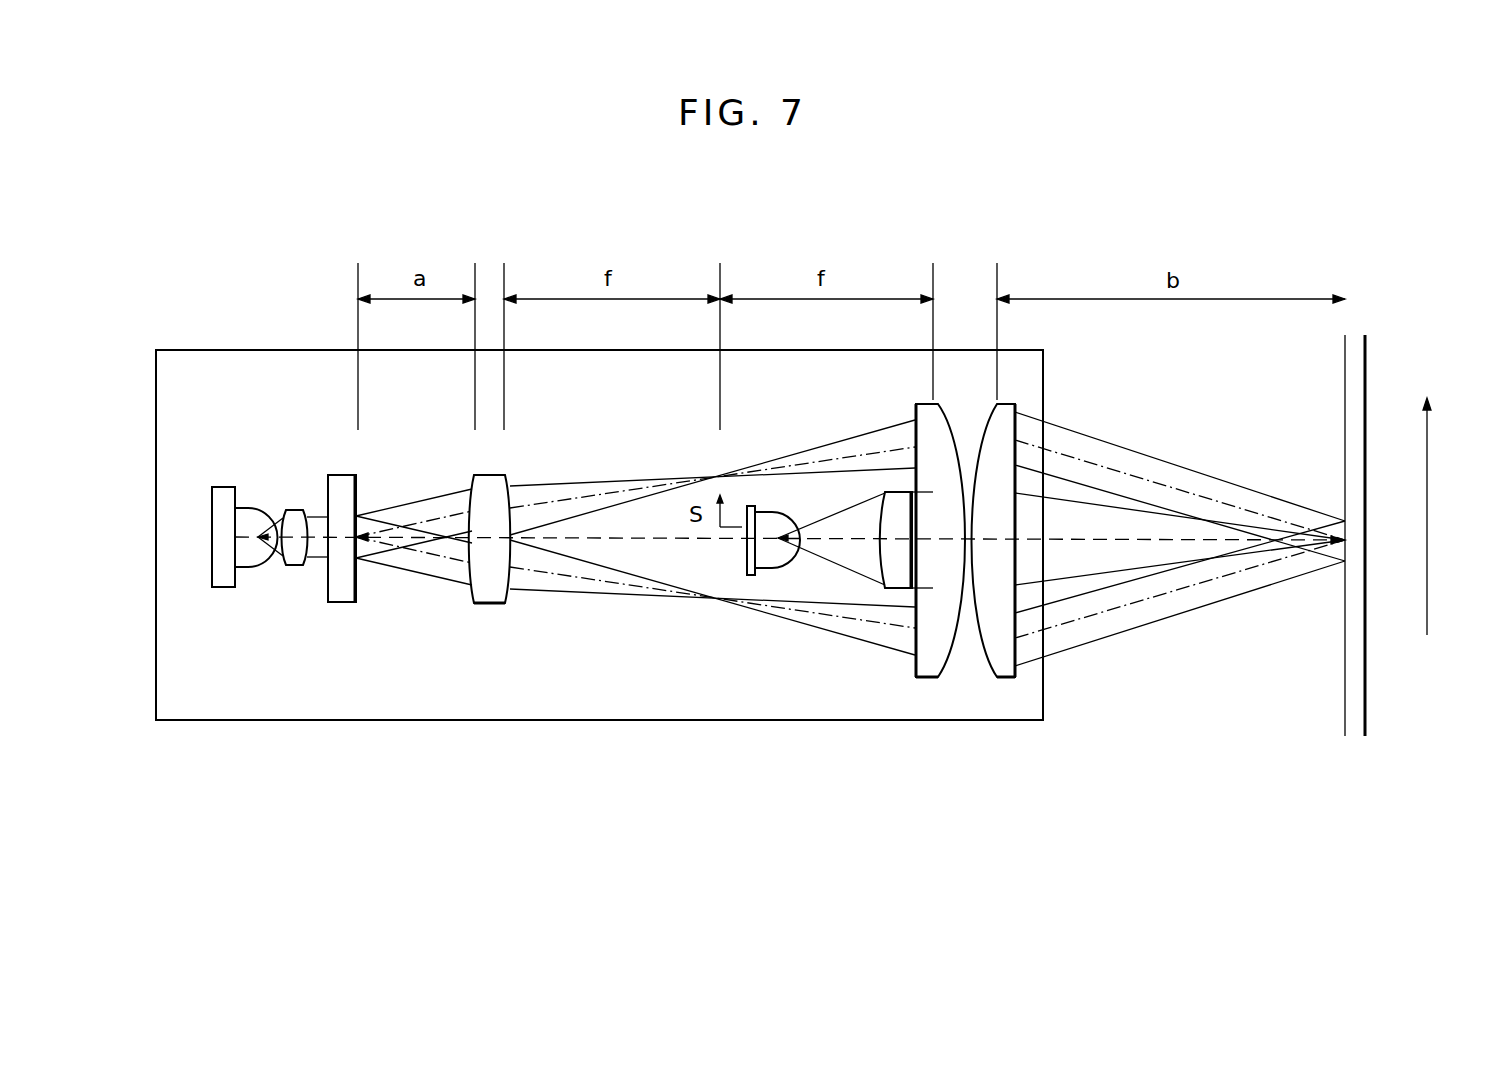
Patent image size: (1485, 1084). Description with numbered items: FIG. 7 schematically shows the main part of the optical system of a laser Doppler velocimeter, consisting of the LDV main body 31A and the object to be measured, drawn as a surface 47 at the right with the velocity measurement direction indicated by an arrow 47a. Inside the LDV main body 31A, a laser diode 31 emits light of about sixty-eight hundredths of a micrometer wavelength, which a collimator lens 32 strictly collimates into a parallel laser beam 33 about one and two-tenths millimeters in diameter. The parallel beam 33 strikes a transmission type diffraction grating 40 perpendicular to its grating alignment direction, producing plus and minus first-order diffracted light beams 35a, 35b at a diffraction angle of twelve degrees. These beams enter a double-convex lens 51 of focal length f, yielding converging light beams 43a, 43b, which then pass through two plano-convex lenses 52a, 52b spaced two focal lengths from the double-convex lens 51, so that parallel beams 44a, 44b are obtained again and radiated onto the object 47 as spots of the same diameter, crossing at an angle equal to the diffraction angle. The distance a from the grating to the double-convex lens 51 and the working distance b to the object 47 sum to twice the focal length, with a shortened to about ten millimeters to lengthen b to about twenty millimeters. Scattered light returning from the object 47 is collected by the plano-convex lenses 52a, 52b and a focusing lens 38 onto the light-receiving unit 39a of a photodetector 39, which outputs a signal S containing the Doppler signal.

The LDV main body 31A is at (210, 362).
The laser diode 31 is at (245, 567).
The collimator lens 32 is at (293, 508).
The laser beam 33 is at (318, 551).
The diffraction grating 40 is at (348, 600).
The diffracted light beam 35a is at (420, 501).
The diffracted light beam 35b is at (415, 568).
The double-convex lens 51 is at (492, 605).
The light beam 43a is at (576, 485).
The light beam 43b is at (594, 592).
The photodetector 39 is at (771, 562).
The light-receiving unit 39a is at (780, 537).
The focusing lens 38 is at (892, 565).
The plano-convex lens 52a is at (925, 680).
The plano-convex lens 52b is at (1004, 680).
The parallel beam 44a is at (1152, 460).
The parallel beam 44b is at (1153, 617).
The original document / scanned surface 47 is at (1360, 707).
The scanning direction 47a is at (1427, 638).